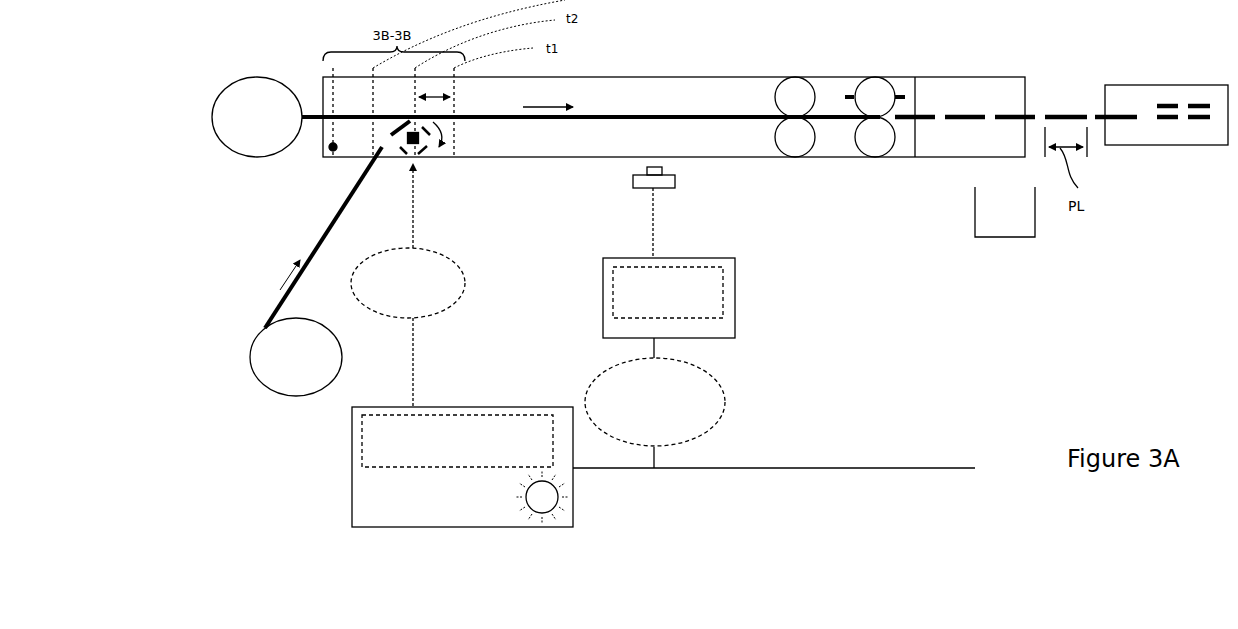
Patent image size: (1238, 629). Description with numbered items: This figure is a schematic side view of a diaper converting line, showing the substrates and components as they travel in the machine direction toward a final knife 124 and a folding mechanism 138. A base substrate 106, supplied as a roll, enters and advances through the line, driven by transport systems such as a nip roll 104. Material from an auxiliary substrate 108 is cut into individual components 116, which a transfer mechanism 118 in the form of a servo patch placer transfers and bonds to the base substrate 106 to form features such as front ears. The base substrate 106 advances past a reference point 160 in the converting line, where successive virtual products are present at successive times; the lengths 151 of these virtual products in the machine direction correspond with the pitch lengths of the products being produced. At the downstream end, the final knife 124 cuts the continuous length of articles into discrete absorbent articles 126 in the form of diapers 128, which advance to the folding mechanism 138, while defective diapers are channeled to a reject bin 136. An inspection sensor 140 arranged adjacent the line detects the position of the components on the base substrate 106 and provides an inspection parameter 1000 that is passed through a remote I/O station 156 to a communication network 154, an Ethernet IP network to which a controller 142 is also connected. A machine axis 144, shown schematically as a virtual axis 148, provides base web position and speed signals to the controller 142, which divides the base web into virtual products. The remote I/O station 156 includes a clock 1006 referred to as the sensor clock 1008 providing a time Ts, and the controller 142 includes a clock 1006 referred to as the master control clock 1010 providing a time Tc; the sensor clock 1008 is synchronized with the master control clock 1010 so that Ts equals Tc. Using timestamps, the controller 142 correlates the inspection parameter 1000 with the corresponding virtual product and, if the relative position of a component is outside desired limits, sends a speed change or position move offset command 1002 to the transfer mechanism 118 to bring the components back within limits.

The nip roll 104 is at (795, 92).
The base substrate 106 is at (313, 110).
The auxiliary substrate 108 is at (278, 385).
The individual components 116 is at (388, 130).
The transfer mechanism 118 is at (430, 150).
The final knife 124 is at (873, 97).
The discrete absorbent articles 126 is at (1052, 66).
The diapers 128 is at (930, 112).
The reject bin 136 is at (998, 237).
The folding mechanism 138 is at (1150, 140).
The inspection sensor 140 is at (642, 182).
The controller 142 is at (468, 422).
The machine axis 144 is at (594, 497).
The virtual axis 148 is at (545, 507).
The lengths of the virtual products 151 is at (440, 120).
The communication network 154 is at (873, 467).
The remote I/O station 156 is at (739, 298).
The reference point 160 is at (333, 152).
The inspection parameter 1000 is at (720, 417).
The speed change or position move offset commands 1002 is at (443, 310).
The clock 1006 is at (458, 416).
The sensor clock 1008 is at (725, 293).
The master control clock 1010 is at (483, 414).